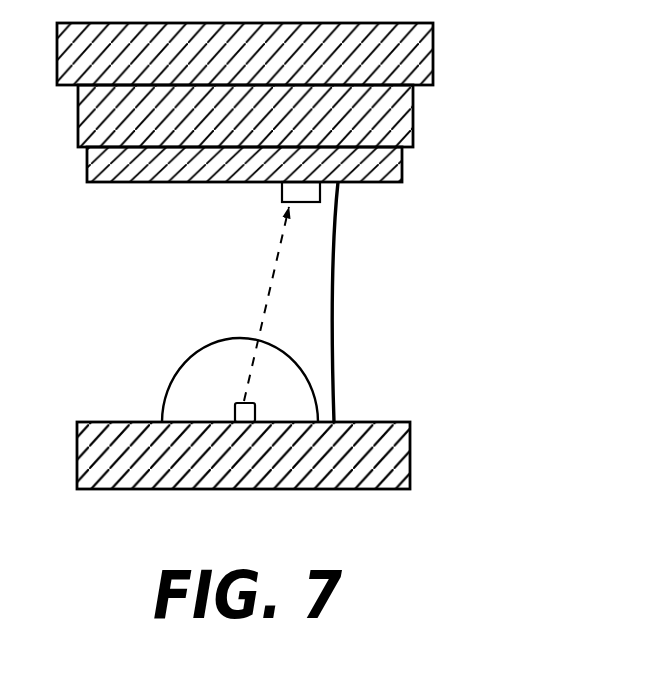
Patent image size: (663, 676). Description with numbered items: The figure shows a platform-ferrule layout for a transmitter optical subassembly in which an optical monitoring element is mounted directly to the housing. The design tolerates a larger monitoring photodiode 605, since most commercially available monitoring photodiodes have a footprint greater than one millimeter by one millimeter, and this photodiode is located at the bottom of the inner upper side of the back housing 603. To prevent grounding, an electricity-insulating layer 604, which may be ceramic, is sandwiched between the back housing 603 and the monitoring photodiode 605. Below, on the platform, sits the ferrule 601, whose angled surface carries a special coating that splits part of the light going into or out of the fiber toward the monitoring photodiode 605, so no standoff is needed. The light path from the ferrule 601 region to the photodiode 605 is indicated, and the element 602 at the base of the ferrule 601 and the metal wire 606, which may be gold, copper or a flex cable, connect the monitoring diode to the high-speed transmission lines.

The ferrule 601 is at (196, 371).
The light emitting element 602 is at (235, 412).
The back housing 603 is at (399, 55).
The electricity-insulating layer 604 is at (386, 118).
The monitoring photodiode 605 is at (276, 194).
The connecting wire 606 is at (339, 307).